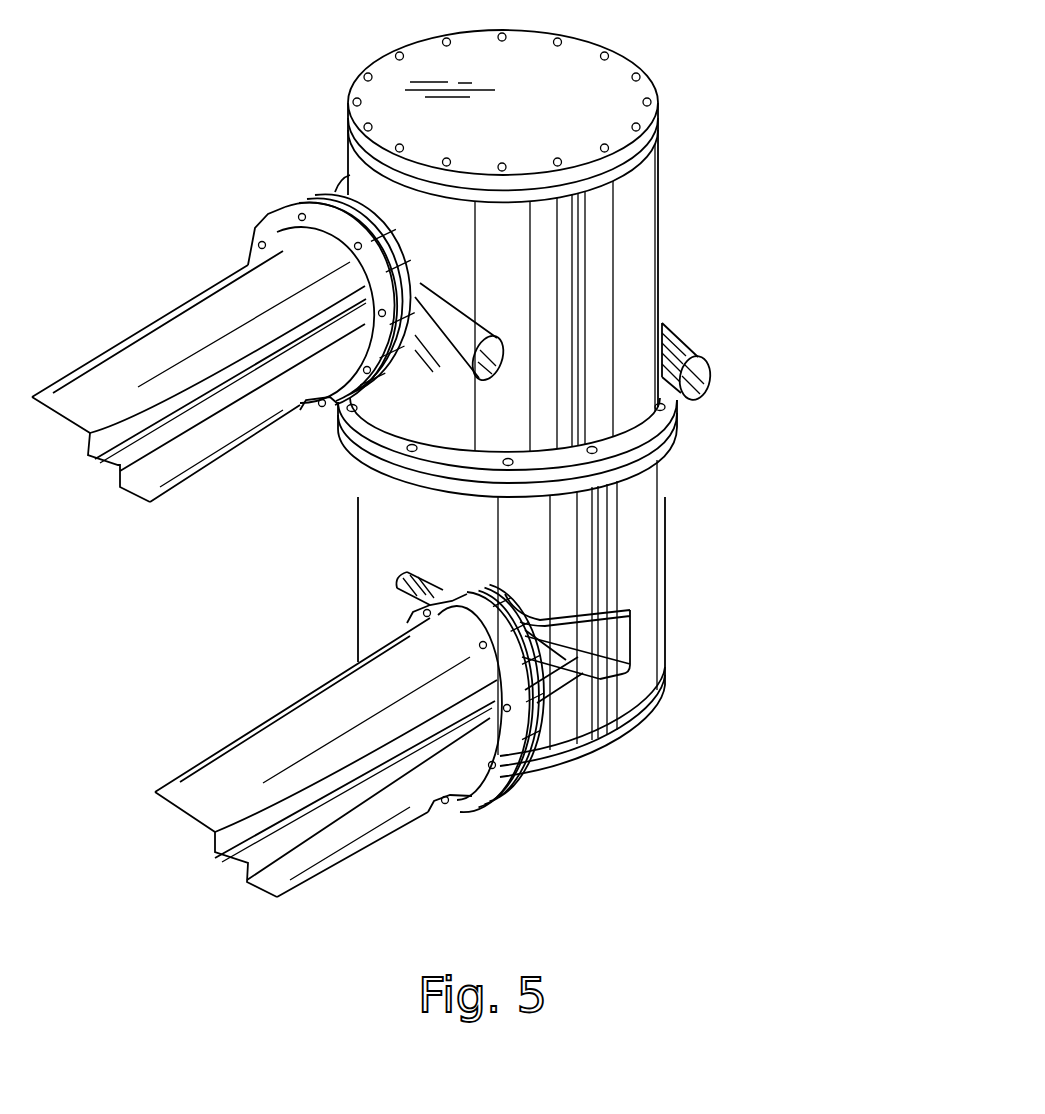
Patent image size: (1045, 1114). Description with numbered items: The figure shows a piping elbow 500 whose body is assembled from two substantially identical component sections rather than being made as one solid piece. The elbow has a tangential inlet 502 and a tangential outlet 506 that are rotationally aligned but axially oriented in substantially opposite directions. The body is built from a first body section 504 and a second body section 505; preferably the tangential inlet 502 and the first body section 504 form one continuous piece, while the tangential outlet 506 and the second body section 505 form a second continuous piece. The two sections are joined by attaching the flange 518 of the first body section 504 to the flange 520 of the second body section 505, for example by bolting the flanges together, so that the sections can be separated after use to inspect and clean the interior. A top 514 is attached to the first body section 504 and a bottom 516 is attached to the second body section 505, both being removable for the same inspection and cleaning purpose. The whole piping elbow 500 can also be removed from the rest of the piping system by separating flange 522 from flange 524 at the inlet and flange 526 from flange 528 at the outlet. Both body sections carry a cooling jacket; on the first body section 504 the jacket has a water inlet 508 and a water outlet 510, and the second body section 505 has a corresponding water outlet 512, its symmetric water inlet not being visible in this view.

The piping elbow 500 is at (446, 465).
The tangential inlet 502 is at (350, 182).
The first body section 504 is at (632, 278).
The second body section 505 is at (673, 498).
The tangential outlet 506 is at (563, 690).
The water inlet 508 is at (708, 378).
The water outlet 510 is at (497, 332).
The water outlet 512 is at (420, 590).
The top 514 is at (560, 133).
The bottom 516 is at (660, 738).
The flange 518 is at (675, 420).
The flange 520 is at (662, 450).
The flange 522 is at (327, 195).
The flange 524 is at (267, 223).
The flange 526 is at (620, 650).
The flange 528 is at (477, 808).